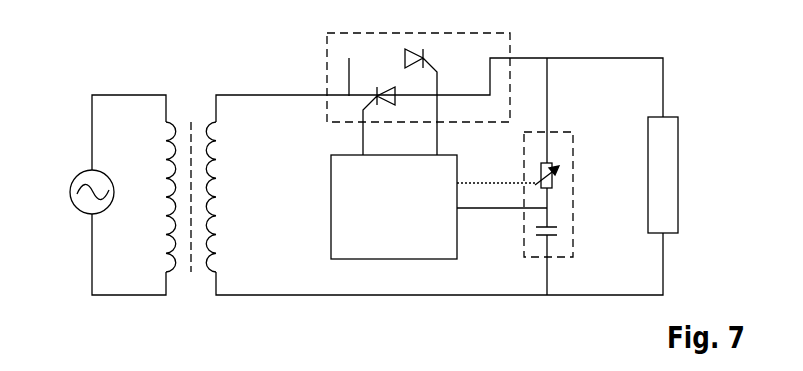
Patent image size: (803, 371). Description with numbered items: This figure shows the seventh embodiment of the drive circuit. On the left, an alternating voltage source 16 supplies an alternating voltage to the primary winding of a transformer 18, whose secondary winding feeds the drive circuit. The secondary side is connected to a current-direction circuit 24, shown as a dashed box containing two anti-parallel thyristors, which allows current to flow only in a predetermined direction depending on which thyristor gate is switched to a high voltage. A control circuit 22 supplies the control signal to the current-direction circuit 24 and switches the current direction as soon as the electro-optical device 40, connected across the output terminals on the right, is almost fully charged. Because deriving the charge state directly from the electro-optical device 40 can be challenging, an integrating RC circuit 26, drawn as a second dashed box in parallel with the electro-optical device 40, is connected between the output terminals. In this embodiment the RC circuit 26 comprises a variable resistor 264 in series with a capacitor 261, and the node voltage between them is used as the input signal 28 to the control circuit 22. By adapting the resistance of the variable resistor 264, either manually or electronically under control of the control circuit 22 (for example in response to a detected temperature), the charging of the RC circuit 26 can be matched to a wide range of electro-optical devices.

The alternating voltage source 16 is at (76, 211).
The transformer 18 is at (184, 287).
The control circuit 22 is at (372, 226).
The current-direction circuit 24 is at (510, 33).
The RC circuit 26 is at (582, 199).
The capacitor 261 is at (545, 232).
The variable resistor 264 is at (545, 163).
The input signal 28 is at (482, 208).
The electro-optical device 40 is at (668, 158).